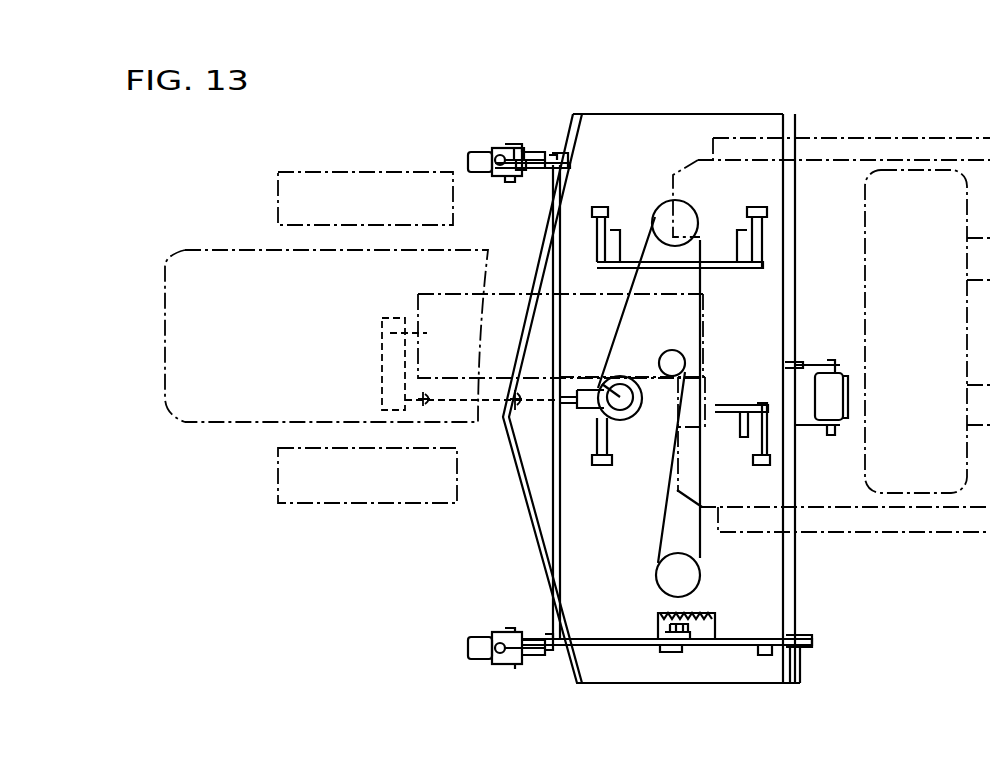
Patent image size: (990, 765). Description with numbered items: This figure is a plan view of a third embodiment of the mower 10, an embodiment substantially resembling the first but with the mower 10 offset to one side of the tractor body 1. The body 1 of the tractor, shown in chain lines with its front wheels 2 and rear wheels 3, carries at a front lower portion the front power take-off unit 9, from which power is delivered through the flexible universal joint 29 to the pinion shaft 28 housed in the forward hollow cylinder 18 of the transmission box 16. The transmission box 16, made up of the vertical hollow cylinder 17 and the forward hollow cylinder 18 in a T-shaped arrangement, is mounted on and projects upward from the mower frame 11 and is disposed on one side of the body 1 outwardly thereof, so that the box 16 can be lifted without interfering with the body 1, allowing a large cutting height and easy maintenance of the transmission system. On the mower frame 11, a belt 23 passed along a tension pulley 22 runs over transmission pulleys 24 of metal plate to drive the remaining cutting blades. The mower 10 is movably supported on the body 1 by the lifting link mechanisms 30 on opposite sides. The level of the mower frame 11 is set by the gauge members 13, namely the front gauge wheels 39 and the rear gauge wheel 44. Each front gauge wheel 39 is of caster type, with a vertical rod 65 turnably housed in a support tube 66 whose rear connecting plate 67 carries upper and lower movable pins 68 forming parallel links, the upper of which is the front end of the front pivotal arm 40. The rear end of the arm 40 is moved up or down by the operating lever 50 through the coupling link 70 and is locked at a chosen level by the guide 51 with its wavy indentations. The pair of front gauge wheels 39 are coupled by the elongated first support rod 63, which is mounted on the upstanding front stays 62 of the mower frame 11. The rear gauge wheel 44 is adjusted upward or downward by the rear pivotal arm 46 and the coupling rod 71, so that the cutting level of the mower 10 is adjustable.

The body 1 is at (507, 294).
The front wheels 2 is at (373, 171).
The rear wheels 3 is at (960, 534).
The front power take-off unit 9 is at (382, 373).
The mower 10 is at (612, 112).
The mower frame 11 is at (676, 115).
The gauge members 13 is at (851, 382).
The transmission box 16 is at (624, 409).
The vertical hollow cylinder 17 is at (614, 388).
The forward hollow cylinder 18 is at (577, 390).
The tension pulley 22 is at (673, 350).
The belt 23 is at (661, 510).
The transmission pulley 24 is at (658, 216).
The pinion shaft 28 is at (570, 406).
The flexible universal joint 29 is at (515, 398).
The lifting link mechanisms 30 is at (770, 232).
The front gauge wheels 39 is at (474, 152).
The front pivotal arm 40 is at (601, 638).
The rear gauge wheel 44 is at (848, 400).
The rear pivotal arms 46 is at (766, 638).
The operating lever 50 is at (690, 624).
The guide 51 is at (716, 620).
The front stays 62 is at (563, 158).
The first support rod 63 is at (552, 188).
The vertical rod 65 is at (510, 146).
The support tube 66 is at (503, 178).
The connecting plate 67 is at (518, 147).
The movable pins 68 is at (521, 158).
The coupling link 70 is at (661, 641).
The coupling rod 71 is at (797, 576).